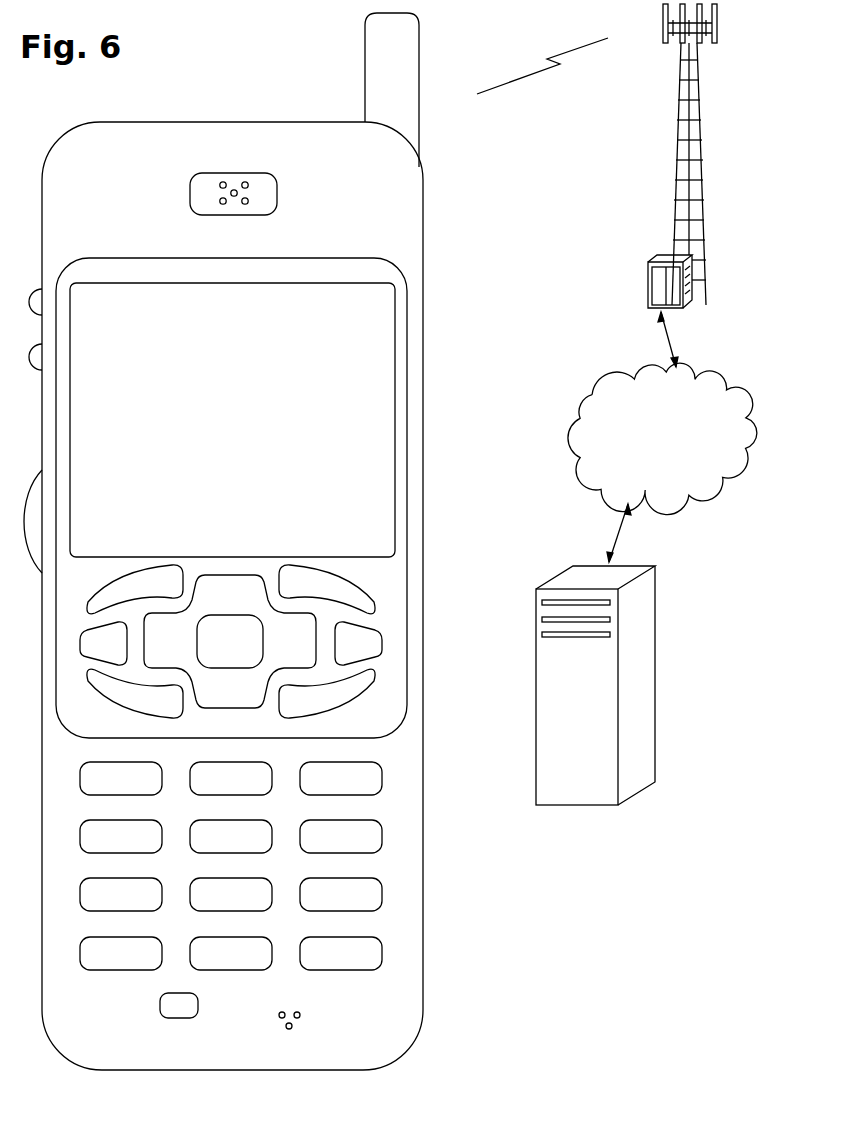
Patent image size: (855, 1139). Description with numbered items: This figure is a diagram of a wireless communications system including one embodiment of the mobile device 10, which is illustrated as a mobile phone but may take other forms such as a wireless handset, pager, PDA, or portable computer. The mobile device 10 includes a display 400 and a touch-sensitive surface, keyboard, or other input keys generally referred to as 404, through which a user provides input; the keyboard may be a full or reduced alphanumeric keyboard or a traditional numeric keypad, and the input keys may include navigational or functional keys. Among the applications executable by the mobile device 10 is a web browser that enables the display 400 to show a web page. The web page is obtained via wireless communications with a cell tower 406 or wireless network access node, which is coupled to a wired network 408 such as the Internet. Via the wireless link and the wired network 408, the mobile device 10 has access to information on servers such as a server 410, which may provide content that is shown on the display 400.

The mobile device 10 is at (86, 1068).
The display 400 is at (405, 289).
The input keys 404 is at (434, 566).
The cell tower 406 is at (677, 170).
The wired network 408 is at (605, 485).
The server 410 is at (572, 805).